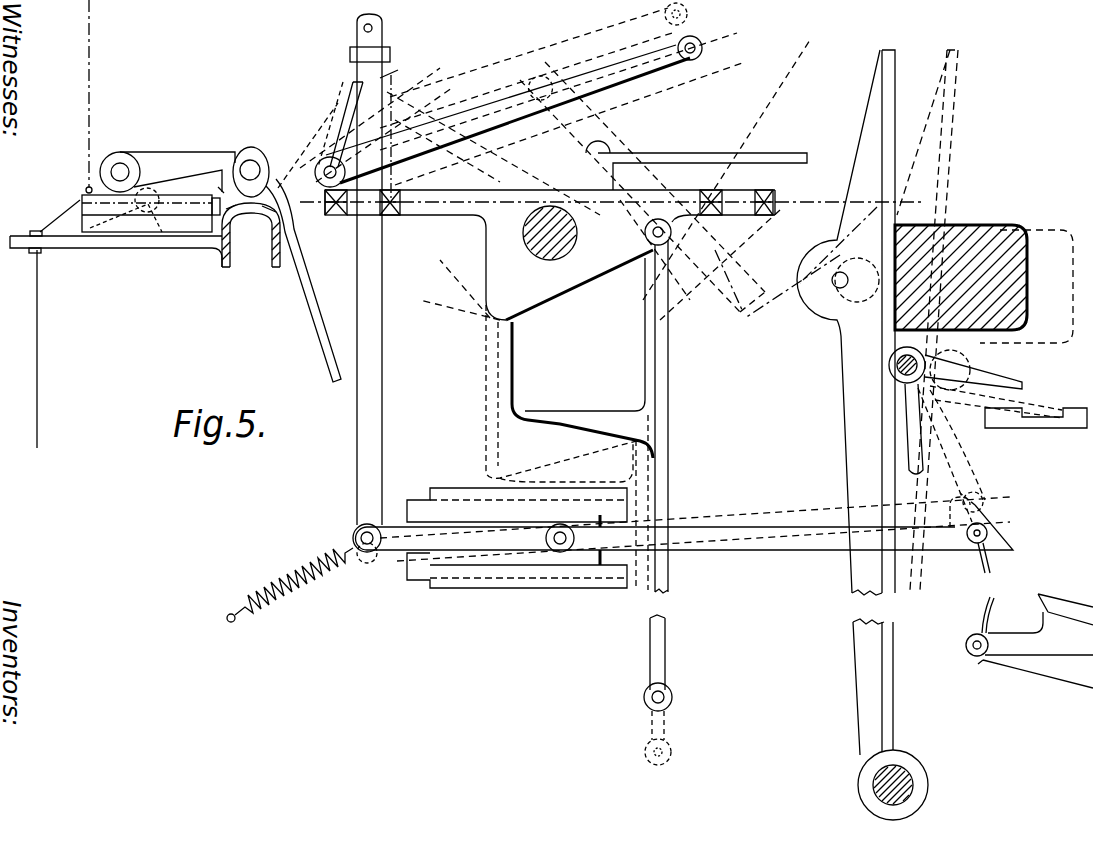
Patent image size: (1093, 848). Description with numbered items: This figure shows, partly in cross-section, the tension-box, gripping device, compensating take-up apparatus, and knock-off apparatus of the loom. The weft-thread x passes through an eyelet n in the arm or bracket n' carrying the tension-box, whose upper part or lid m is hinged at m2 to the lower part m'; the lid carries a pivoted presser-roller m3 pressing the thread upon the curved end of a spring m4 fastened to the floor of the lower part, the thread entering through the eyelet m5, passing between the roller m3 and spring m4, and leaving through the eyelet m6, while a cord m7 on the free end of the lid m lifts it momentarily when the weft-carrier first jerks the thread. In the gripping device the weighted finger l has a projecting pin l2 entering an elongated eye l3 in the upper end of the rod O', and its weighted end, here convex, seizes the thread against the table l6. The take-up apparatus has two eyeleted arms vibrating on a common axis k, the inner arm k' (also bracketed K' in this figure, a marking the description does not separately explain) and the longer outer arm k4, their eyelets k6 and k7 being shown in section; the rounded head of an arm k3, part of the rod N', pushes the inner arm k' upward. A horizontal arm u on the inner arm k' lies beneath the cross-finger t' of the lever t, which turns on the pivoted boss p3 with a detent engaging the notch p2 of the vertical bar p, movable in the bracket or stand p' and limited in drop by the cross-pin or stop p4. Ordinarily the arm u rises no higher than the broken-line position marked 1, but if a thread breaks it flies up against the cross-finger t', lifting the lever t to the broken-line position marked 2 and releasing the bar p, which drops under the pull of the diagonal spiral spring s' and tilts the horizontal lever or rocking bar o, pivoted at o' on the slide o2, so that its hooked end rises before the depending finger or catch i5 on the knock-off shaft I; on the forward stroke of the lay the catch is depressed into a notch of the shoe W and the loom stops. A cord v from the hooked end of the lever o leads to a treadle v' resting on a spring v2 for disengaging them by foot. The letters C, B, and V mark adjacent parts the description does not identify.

The weft-thread x is at (471, 314).
The eyelet n is at (25, 234).
The arm or bracket n' is at (116, 249).
The upper part or lid m is at (147, 210).
The lower part m' is at (185, 225).
The hinge m2 is at (210, 183).
The pivoted roller m3 is at (165, 186).
The spring m4 is at (150, 218).
The eyelet m5 is at (60, 212).
The eyelet m6 is at (224, 206).
The cord m7 is at (90, 96).
The weighted finger l is at (167, 171).
The projecting pin l2 is at (262, 168).
The elongated eye l3 is at (251, 158).
The table l6 is at (251, 235).
The rod O' is at (303, 242).
The vertical bar p is at (374, 269).
The bracket or stand p' is at (380, 55).
The indent or notch p2 is at (358, 117).
The pivoted boss p3 is at (338, 171).
The cross-pin or stop p4 is at (373, 28).
The lever or arm t is at (522, 111).
The cross-finger t' is at (696, 44).
The broken-line position 1 is at (722, 46).
The broken-line position 2 is at (691, 12).
The horizontal arm u is at (696, 161).
The inner arm k' is at (550, 190).
The frame K' is at (561, 337).
The eyelet k6 is at (546, 207).
The eyelet k7 is at (559, 202).
The outer arm k4 is at (653, 219).
The common center or axis k is at (550, 233).
The arm k3 is at (511, 330).
The rod N' is at (666, 416).
The horizontal lever or rocking bar o is at (683, 528).
The pivot stud or pin o' is at (569, 538).
The slide o2 is at (416, 487).
The spiral spring s' is at (290, 584).
The lever C is at (877, 435).
The block B is at (984, 284).
The knock-off shaft I is at (888, 365).
The arm V is at (993, 381).
The shoe W is at (1036, 400).
The depending finger or catch i5 is at (945, 453).
The cord v is at (986, 578).
The treadle v' is at (1029, 625).
The spring v2 is at (1035, 675).